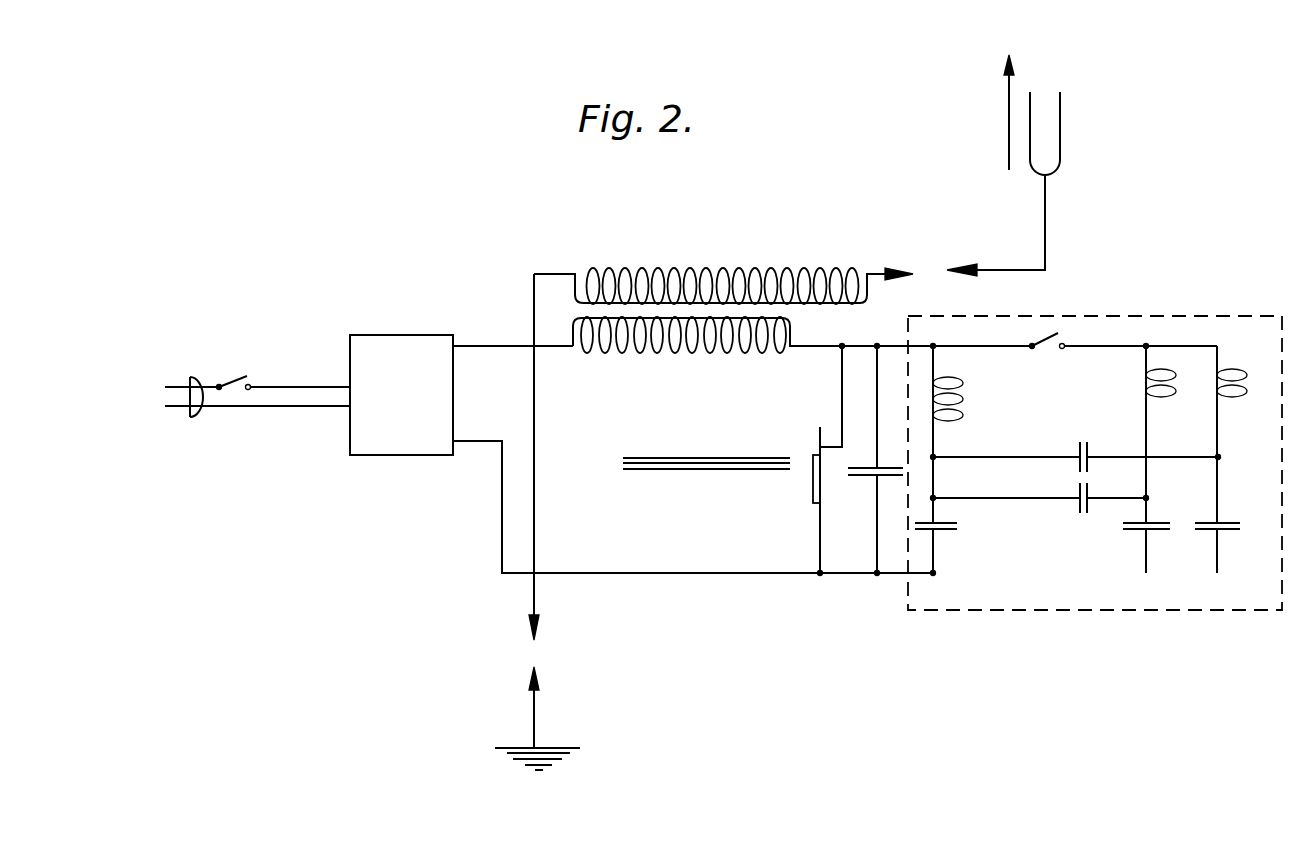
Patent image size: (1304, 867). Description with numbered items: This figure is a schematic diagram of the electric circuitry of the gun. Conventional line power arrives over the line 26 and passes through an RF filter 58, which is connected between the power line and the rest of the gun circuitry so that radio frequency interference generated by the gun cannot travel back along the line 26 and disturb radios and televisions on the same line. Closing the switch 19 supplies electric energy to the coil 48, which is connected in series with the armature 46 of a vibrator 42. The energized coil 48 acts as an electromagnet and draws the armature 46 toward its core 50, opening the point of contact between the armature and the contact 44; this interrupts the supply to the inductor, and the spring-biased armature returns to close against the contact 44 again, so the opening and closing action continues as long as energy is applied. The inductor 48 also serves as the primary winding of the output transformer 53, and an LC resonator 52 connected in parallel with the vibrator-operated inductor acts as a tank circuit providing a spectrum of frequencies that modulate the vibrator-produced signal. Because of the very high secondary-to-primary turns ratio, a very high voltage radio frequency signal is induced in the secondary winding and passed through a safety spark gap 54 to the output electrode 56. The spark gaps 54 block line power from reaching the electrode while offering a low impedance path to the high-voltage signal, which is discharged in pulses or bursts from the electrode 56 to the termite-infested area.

The switch 19 is at (226, 382).
The line 26 is at (288, 356).
The RF filter 58 is at (423, 311).
The output transformer 53 is at (727, 204).
The coil 48 is at (793, 336).
The safety spark gap 54 is at (928, 265).
The output electrode 56 is at (1062, 110).
The LC resonator 52 is at (1230, 287).
The core 50 is at (750, 430).
The contact 44 is at (835, 447).
The vibrator 42 is at (808, 490).
The armature 46 is at (830, 555).